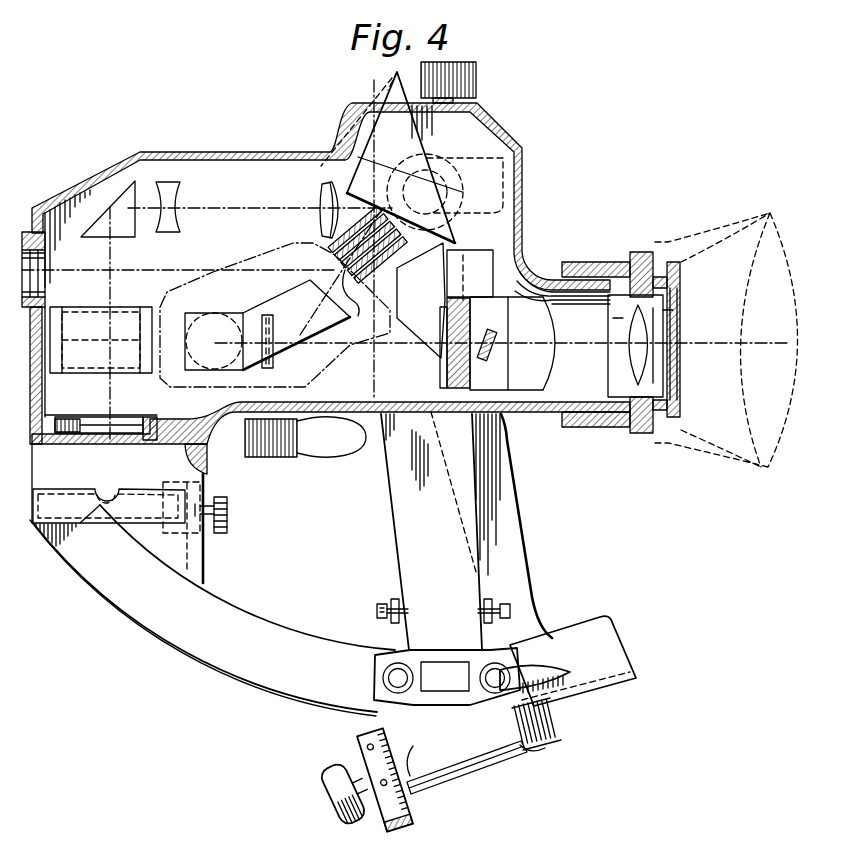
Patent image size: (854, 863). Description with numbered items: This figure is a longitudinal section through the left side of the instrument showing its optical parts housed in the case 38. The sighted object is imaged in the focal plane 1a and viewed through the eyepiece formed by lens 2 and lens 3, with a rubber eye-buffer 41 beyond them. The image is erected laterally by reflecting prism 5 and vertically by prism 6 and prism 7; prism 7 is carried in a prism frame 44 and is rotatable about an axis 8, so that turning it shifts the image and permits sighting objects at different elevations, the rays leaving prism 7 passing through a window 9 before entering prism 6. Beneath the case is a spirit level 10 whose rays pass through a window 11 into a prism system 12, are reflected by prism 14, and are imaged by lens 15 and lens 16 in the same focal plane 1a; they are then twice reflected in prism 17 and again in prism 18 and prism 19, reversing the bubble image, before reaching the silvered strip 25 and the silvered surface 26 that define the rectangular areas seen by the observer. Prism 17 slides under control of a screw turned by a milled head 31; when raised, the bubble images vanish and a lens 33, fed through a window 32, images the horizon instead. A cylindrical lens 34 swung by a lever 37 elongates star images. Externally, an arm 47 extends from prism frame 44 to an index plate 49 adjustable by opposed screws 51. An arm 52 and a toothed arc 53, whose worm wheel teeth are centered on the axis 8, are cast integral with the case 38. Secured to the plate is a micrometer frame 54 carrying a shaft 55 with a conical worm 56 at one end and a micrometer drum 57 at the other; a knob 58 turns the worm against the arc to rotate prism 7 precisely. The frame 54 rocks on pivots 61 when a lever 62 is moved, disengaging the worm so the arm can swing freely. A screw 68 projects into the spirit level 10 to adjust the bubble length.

The focal plane 1a is at (500, 382).
The eyepiece lens 2 is at (550, 355).
The eyepiece lens 3 is at (637, 353).
The reflecting prism 5 is at (214, 341).
The reflecting prism 6 is at (311, 291).
The reflecting prism 7 is at (353, 104).
The axis 8 is at (430, 176).
The window 9 is at (332, 267).
The spirit level 10 is at (58, 492).
The window 11 is at (67, 425).
The prism system 12 is at (120, 315).
The prism 14 is at (108, 310).
The lens 15 is at (183, 191).
The lens 16 is at (326, 218).
The prism 17 is at (460, 242).
The prism 18 is at (478, 267).
The prism 19 is at (413, 330).
The silvered strip 25 is at (487, 330).
The silvered surface 26 is at (445, 392).
The milled head 31 is at (478, 82).
The window 32 is at (44, 267).
The lens 33 is at (355, 304).
The cylindrical lens 34 is at (274, 362).
The lever 37 is at (331, 448).
The case 38 is at (47, 202).
The rubber eye-buffer 41 is at (725, 455).
The prism frame 44 is at (395, 84).
The arm 47 is at (401, 512).
The index plate 49 is at (490, 657).
The opposed screws 51 is at (385, 606).
The arm 52 is at (504, 506).
The arc 53 is at (207, 606).
The micrometer frame 54 is at (464, 771).
The shaft 55 is at (555, 717).
The conical worm 56 is at (553, 745).
The micrometer drum 57 is at (365, 756).
The knob 58 is at (340, 800).
The pivots 61 is at (390, 682).
The lever 62 is at (560, 672).
The screw 68 is at (230, 514).